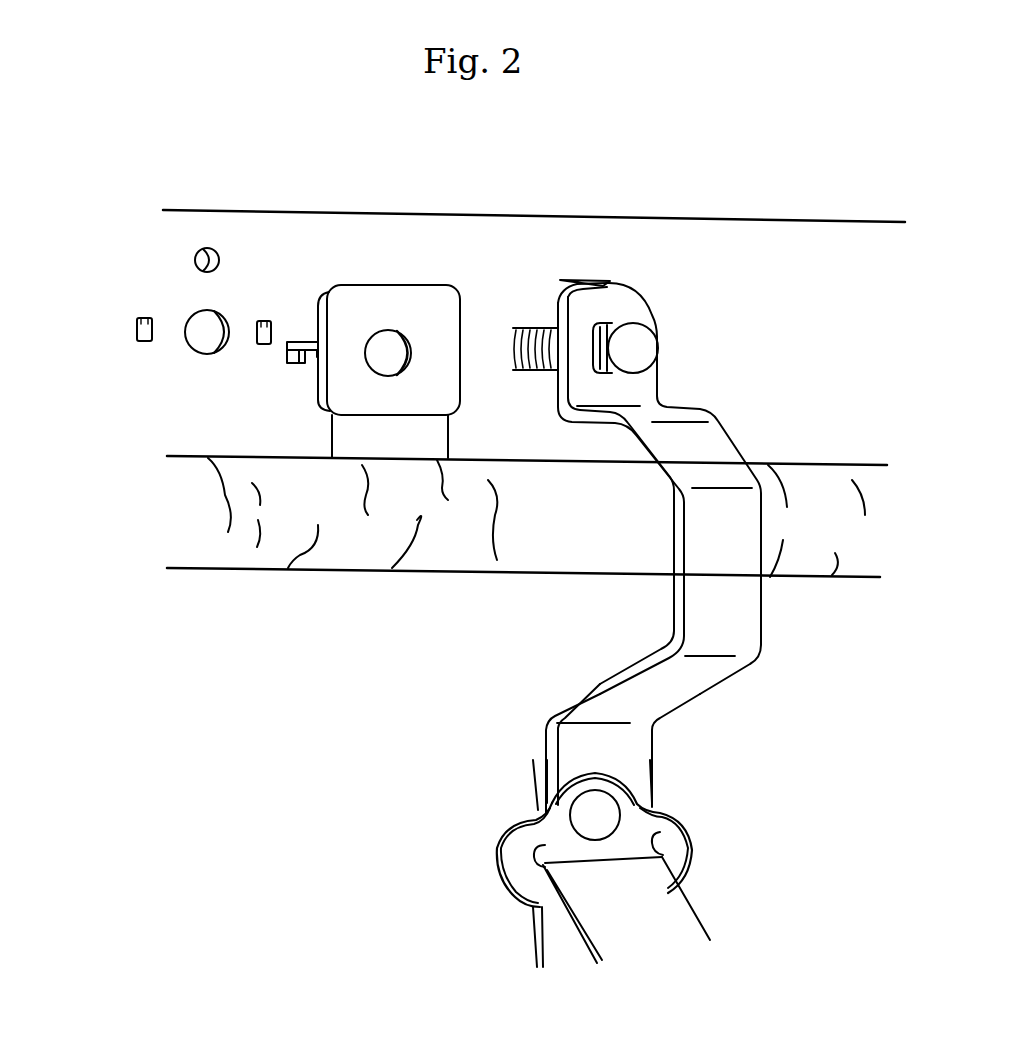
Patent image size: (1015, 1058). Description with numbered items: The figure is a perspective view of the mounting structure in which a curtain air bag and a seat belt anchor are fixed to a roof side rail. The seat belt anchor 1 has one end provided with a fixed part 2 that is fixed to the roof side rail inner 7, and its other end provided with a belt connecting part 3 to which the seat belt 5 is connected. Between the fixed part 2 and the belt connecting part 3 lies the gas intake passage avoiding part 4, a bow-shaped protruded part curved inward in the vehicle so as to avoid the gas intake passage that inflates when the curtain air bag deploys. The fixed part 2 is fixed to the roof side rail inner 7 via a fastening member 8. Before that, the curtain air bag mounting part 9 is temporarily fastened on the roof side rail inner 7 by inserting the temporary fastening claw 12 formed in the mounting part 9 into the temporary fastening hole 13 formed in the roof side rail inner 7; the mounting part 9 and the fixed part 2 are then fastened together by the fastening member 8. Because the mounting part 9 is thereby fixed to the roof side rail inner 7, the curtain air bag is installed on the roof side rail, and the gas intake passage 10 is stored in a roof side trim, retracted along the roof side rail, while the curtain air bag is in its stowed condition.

The seat belt anchor 1 is at (922, 820).
The fixed part 2 is at (672, 546).
The belt connecting part 3 is at (633, 758).
The gas intake passage avoiding part 4 is at (712, 629).
The seat belt 5 is at (673, 917).
The roof side rail inner 7 is at (421, 232).
The fastening member 8 is at (633, 345).
The curtain air bag mounting part 9 is at (442, 301).
The gas intake passage 10 is at (285, 535).
The temporary fastening claw 12 is at (283, 357).
The temporary fastening hole 13 is at (265, 321).